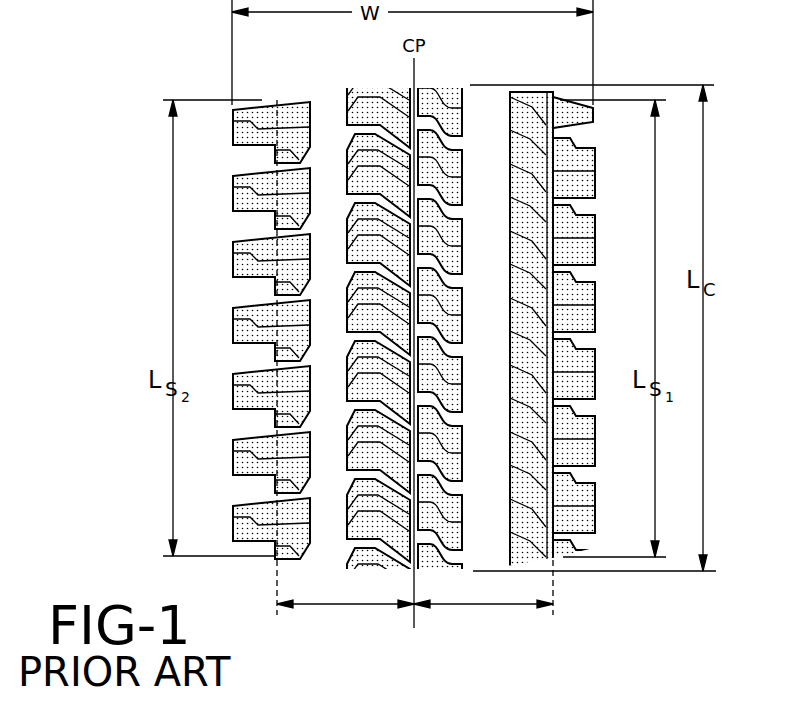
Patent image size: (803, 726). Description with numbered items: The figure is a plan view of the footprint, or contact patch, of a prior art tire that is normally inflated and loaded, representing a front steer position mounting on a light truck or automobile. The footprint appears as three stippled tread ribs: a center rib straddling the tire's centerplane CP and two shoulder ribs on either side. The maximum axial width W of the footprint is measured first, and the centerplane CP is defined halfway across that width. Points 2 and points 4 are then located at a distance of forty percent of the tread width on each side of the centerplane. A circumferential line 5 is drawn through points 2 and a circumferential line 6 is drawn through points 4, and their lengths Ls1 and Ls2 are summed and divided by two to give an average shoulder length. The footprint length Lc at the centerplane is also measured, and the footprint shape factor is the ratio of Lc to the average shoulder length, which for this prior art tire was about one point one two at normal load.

The reference point at forty percent of tread width 2 is at (572, 318).
The reference point at forty percent of tread width 4 is at (250, 313).
The circumferential line 5 is at (584, 272).
The circumferential line 6 is at (237, 296).